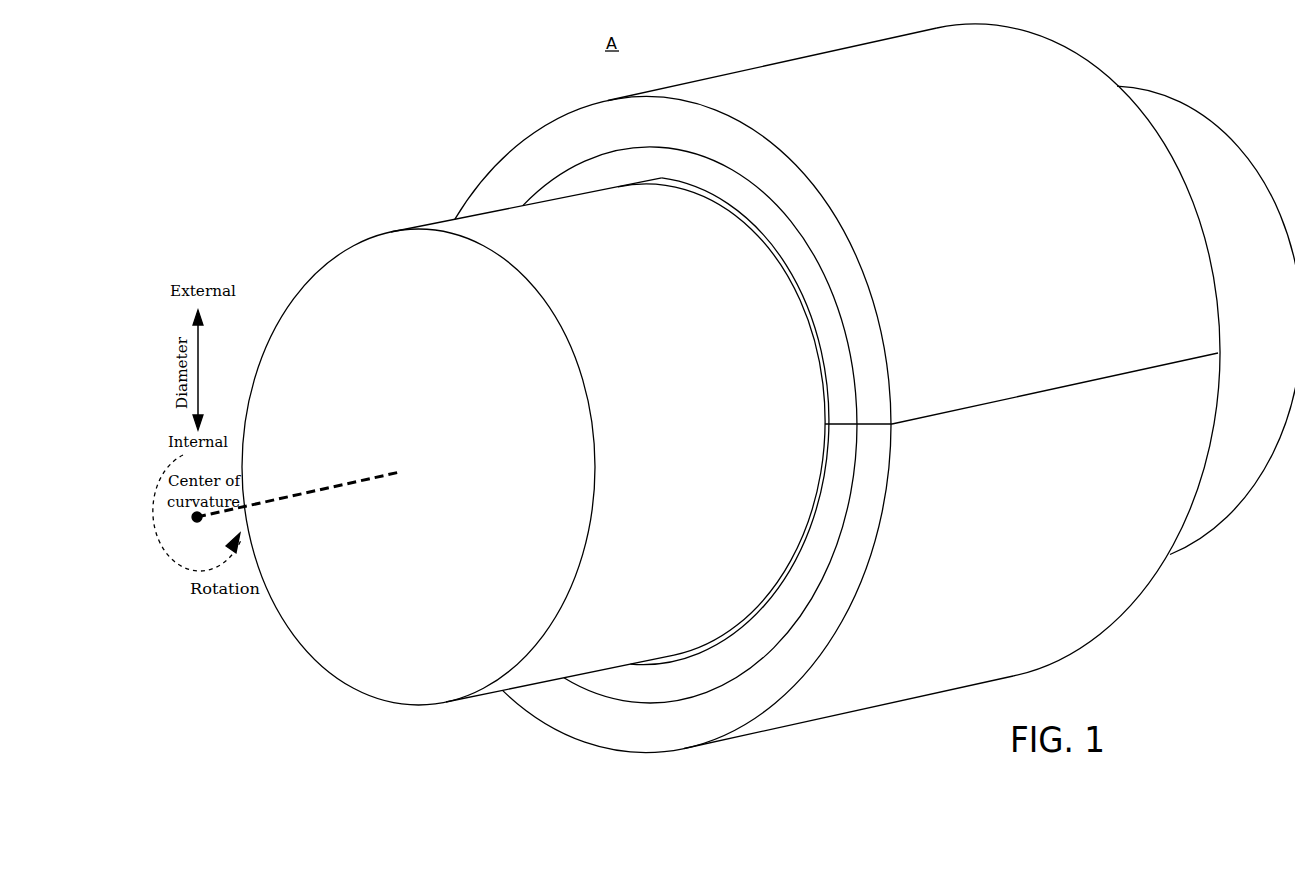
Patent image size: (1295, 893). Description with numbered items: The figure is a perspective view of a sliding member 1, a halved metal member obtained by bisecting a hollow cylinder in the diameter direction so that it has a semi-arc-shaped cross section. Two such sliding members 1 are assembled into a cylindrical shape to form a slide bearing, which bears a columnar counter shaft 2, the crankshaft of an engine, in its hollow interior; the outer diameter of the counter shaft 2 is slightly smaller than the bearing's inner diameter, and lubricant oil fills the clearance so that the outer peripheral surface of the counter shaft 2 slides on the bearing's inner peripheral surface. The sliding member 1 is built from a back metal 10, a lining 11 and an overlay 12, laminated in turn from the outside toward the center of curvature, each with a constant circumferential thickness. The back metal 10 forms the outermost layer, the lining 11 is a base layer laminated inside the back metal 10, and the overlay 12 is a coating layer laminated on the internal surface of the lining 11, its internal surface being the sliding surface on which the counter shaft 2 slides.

The sliding member 1 is at (750, 69).
The counter shaft 2 is at (345, 250).
The back metal 10 is at (647, 110).
The lining 11 is at (623, 158).
The overlay 12 is at (610, 183).